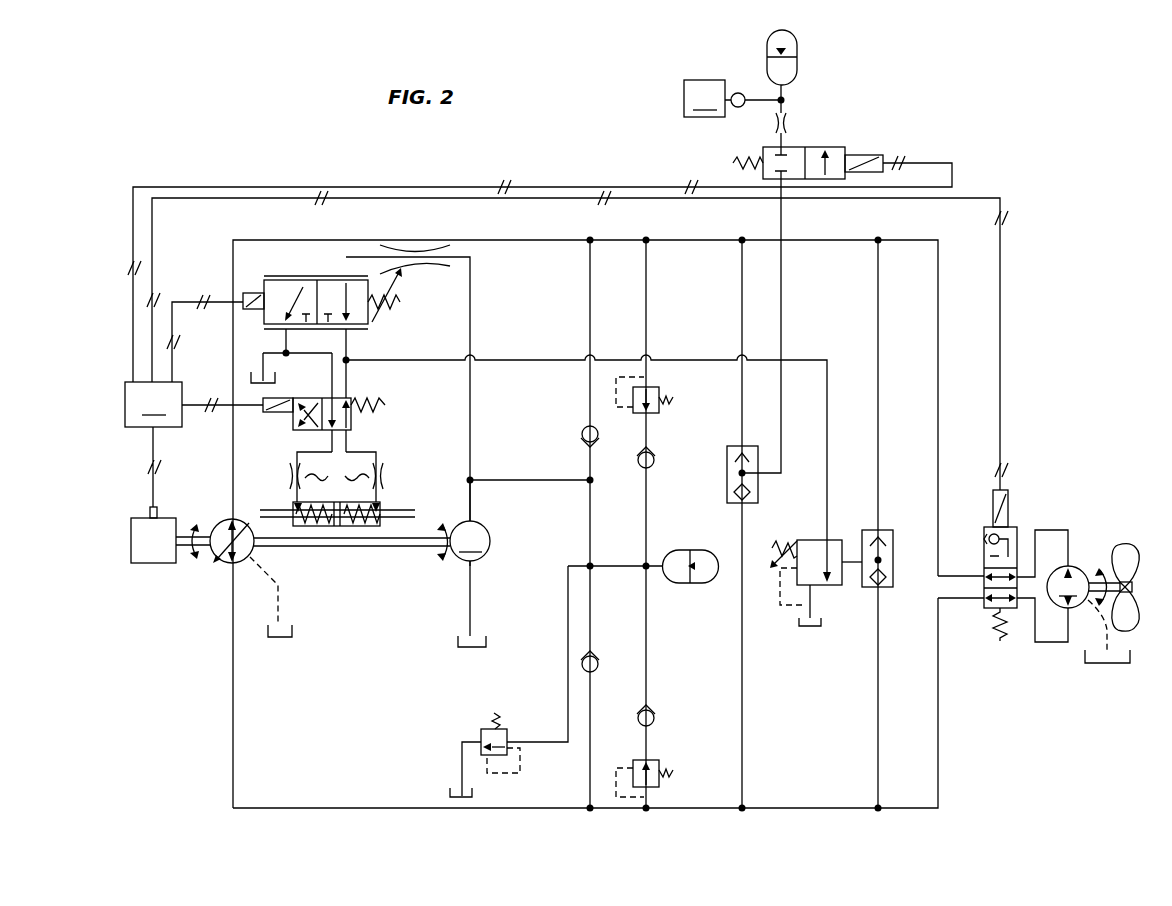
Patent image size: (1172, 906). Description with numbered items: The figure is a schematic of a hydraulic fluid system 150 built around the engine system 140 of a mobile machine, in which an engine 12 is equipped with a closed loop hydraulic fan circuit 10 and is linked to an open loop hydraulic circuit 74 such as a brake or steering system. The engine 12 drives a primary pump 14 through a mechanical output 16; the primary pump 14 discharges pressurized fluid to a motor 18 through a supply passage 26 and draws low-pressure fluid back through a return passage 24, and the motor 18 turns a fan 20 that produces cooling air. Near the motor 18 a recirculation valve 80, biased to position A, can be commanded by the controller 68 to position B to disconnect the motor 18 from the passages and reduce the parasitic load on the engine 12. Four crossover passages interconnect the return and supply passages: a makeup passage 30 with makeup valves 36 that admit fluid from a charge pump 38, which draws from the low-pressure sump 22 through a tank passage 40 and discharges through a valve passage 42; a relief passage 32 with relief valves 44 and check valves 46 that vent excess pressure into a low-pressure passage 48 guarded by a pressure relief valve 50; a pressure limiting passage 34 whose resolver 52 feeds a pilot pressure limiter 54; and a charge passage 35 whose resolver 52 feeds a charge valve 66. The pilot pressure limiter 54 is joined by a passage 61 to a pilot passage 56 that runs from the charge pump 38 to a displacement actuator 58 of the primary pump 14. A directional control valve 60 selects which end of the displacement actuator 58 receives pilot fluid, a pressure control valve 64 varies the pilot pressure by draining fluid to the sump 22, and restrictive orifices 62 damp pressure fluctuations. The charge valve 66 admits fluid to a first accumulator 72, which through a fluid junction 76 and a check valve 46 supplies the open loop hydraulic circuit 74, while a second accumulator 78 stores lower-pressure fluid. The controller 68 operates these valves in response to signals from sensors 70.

The hydraulic fan circuit 10 is at (1034, 300).
The engine 12 is at (158, 563).
The primary pump 14 is at (222, 518).
The mechanical output 16 is at (182, 546).
The motor 18 is at (1074, 590).
The fan 20 is at (1125, 545).
The low-pressure sump 22 is at (276, 375).
The return passage 24 is at (233, 726).
The supply passage 26 is at (234, 334).
The makeup passage 30 is at (590, 302).
The relief passage 32 is at (646, 302).
The pressure limiting passage 34 is at (878, 297).
The charge passage 35 is at (742, 750).
The makeup valve 36 is at (581, 432).
The charge pump 38 is at (463, 523).
The tank passage 40 is at (470, 597).
The valve passage 42 is at (499, 480).
The relief valve 44 is at (672, 403).
The check valve 46 is at (652, 463).
The low-pressure passage 48 is at (568, 580).
The pressure relief valve 50 is at (500, 712).
The resolver 52 is at (727, 490).
The pilot pressure limiter 54 is at (810, 540).
The pilot passage 56 is at (470, 410).
The displacement actuator 58 is at (415, 510).
The directional control valve 60 is at (358, 396).
The passage 61 is at (812, 358).
The restrictive orifice 62 is at (440, 268).
The pressure control valve 64 is at (286, 277).
The charge valve 66 is at (836, 147).
The controller 68 is at (194, 404).
The sensor 70 is at (158, 505).
The first accumulator 72 is at (797, 62).
The open loop hydraulic circuit 74 is at (704, 98).
The fluid junction 76 is at (786, 100).
The second accumulator 78 is at (668, 550).
The recirculation valve 80 is at (990, 515).
The engine system 140 is at (206, 776).
The hydraulic fluid system 150 is at (1034, 121).